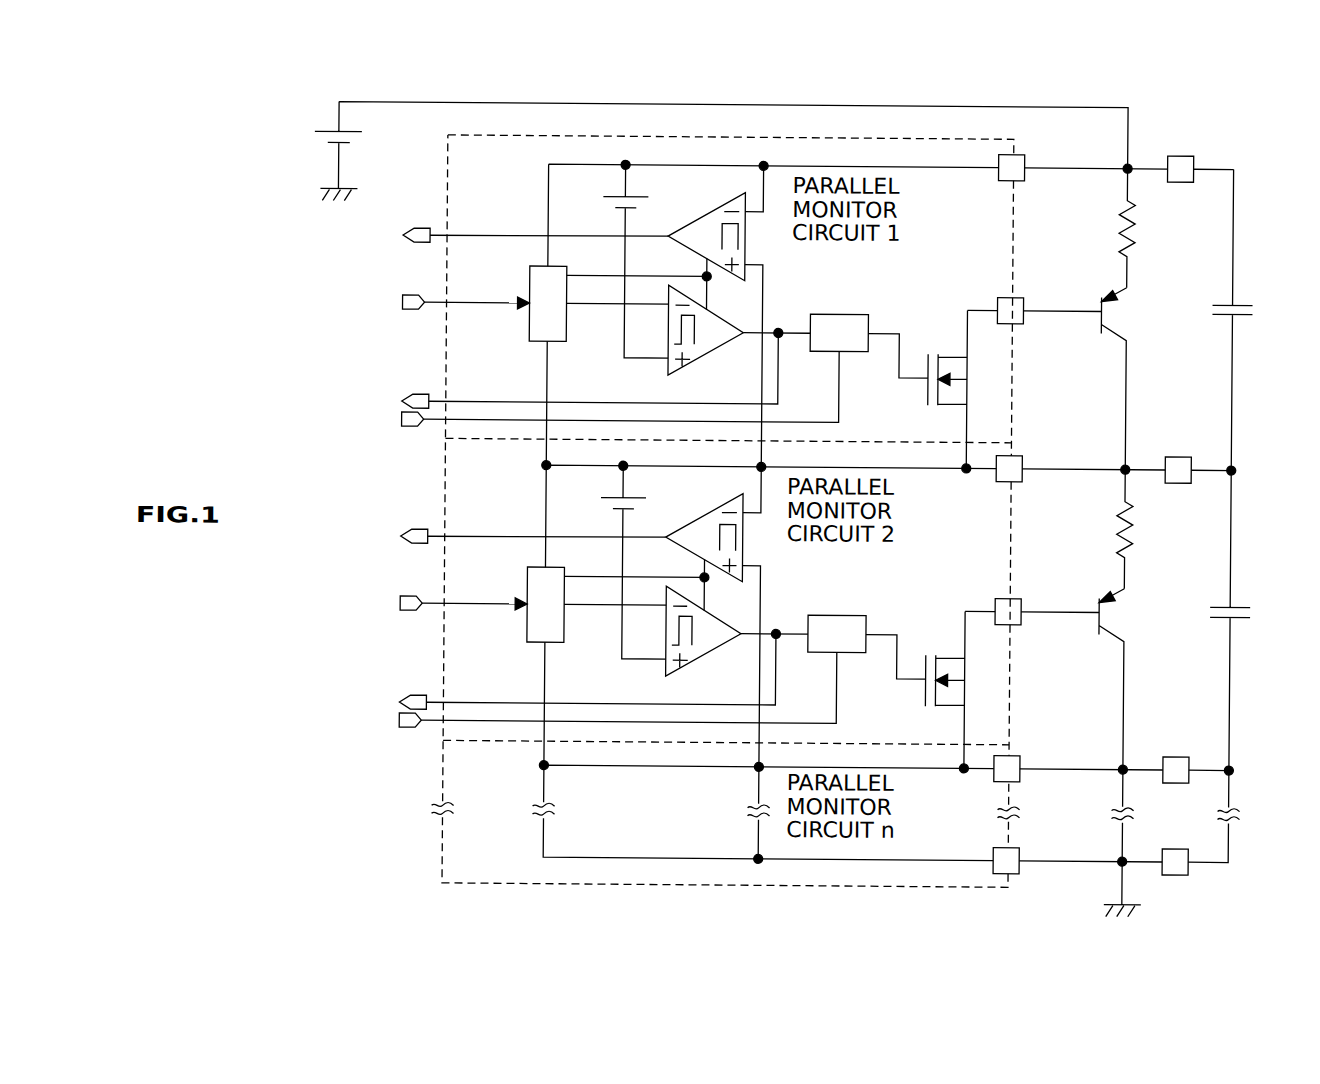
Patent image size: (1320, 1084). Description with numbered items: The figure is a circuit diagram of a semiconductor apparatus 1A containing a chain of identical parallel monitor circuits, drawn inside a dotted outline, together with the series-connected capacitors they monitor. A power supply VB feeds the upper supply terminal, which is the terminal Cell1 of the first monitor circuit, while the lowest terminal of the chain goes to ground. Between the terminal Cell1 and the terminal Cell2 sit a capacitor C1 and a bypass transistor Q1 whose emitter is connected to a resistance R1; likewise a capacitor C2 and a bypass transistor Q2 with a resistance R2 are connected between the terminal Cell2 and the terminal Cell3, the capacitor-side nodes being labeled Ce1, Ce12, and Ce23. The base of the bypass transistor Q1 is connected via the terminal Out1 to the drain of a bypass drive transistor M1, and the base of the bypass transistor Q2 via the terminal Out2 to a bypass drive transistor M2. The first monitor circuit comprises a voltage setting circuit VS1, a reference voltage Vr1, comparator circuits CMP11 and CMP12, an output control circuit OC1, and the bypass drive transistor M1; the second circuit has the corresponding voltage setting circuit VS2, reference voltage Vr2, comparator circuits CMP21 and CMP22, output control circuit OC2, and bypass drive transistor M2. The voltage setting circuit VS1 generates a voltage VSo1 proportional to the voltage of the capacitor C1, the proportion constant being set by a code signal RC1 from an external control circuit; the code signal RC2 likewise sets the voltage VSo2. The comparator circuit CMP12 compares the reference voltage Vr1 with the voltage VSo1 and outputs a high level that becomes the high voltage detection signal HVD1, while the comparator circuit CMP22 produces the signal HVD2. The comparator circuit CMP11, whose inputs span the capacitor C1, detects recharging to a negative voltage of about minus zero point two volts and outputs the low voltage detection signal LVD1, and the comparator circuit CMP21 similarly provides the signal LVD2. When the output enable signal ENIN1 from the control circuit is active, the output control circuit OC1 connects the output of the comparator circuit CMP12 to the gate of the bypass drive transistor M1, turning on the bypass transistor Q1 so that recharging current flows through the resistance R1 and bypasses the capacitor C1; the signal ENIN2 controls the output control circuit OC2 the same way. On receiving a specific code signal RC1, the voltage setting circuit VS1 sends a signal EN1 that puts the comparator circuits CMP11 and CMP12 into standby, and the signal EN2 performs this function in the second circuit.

The semiconductor apparatus 1A is at (447, 174).
The power supply VB is at (713, 153).
The voltage setting circuit VS1 is at (528, 285).
The voltage setting circuit VS2 is at (509, 604).
The code signal RC1 is at (441, 303).
The code signal RC2 is at (439, 604).
The low voltage detection signal LVD1 is at (503, 239).
The low voltage detection signal LVD2 is at (501, 540).
The high voltage detection signal HVD1 is at (558, 372).
The high voltage detection signal HVD2 is at (555, 673).
The output enable signal ENIN1 is at (584, 393).
The output enable signal ENIN2 is at (582, 694).
The reference voltage Vr1 is at (626, 261).
The reference voltage Vr2 is at (622, 562).
The enable signal EN1 is at (638, 279).
The enable signal EN2 is at (636, 580).
The output voltage of voltage setting circuit VSo1 is at (618, 291).
The output voltage of voltage setting circuit VSo2 is at (615, 592).
The comparator circuit CMP11 is at (705, 214).
The comparator circuit CMP12 is at (715, 373).
The comparator circuit CMP21 is at (697, 529).
The comparator circuit CMP22 is at (709, 640).
The output control circuit OC1 is at (833, 314).
The output control circuit OC2 is at (834, 623).
The bypass drive transistor M1 is at (946, 389).
The bypass drive transistor M2 is at (943, 690).
The terminal Out1 is at (1034, 303).
The terminal Out2 is at (1032, 604).
The bypass transistor Q1 is at (1105, 364).
The bypass transistor Q2 is at (1102, 667).
The resistance R1 is at (1111, 227).
The resistance R2 is at (1107, 528).
The capacitor C1 is at (1250, 320).
The capacitor C2 is at (1248, 621).
The terminal Cell1 is at (1082, 167).
The terminal Cell2 is at (1080, 460).
The terminal Cell3 is at (1078, 761).
The cell connection terminal 1 Ce1 is at (1204, 160).
The cell connection terminal 12 Ce12 is at (1191, 456).
The cell connection terminal 23 Ce23 is at (1191, 757).